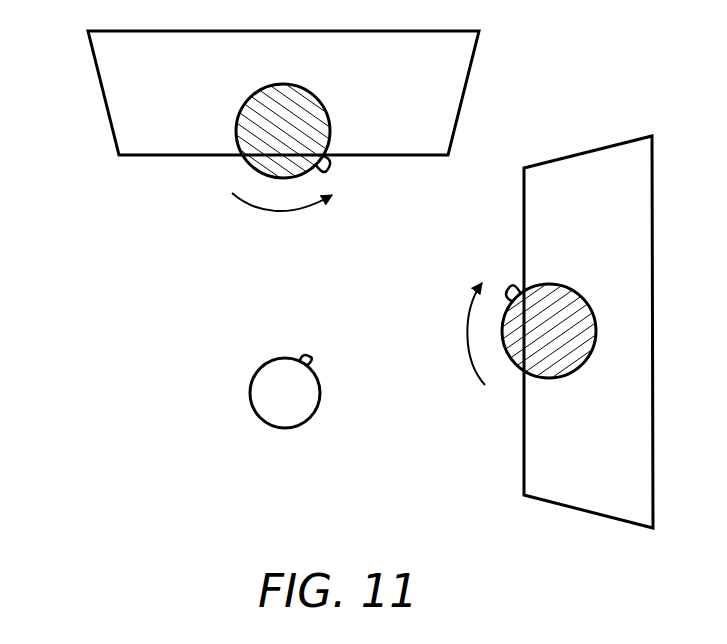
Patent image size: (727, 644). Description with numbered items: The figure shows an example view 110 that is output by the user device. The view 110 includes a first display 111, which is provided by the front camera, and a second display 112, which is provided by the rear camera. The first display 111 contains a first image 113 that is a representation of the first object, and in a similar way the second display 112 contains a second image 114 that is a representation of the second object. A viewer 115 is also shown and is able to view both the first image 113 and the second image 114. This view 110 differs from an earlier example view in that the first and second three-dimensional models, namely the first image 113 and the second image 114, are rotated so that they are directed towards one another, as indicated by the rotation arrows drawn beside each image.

The view 110 is at (100, 523).
The first display 111 is at (115, 142).
The second display 112 is at (618, 520).
The first image 113 is at (325, 100).
The second image 114 is at (567, 285).
The viewer 115 is at (287, 430).